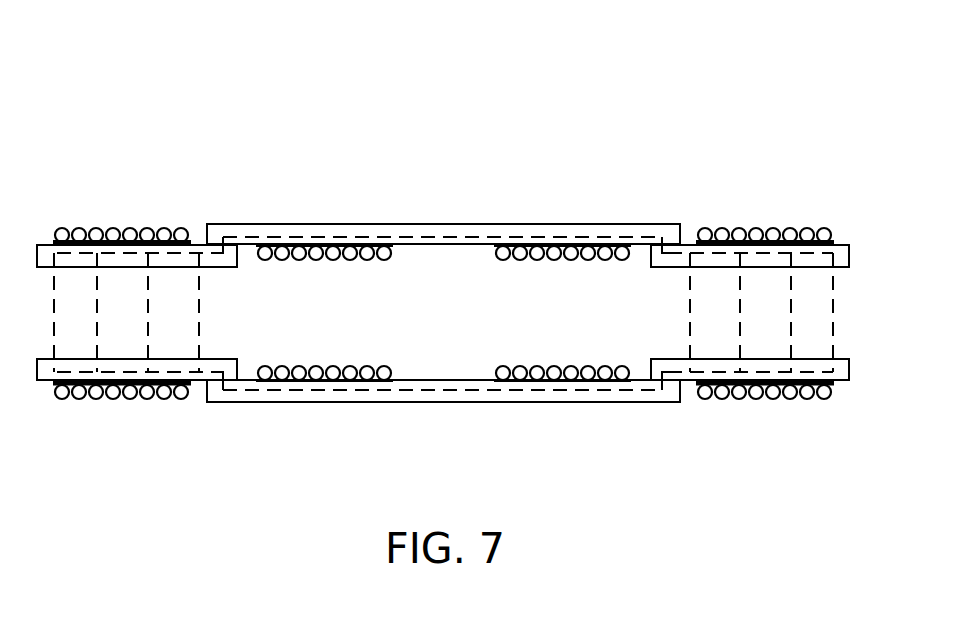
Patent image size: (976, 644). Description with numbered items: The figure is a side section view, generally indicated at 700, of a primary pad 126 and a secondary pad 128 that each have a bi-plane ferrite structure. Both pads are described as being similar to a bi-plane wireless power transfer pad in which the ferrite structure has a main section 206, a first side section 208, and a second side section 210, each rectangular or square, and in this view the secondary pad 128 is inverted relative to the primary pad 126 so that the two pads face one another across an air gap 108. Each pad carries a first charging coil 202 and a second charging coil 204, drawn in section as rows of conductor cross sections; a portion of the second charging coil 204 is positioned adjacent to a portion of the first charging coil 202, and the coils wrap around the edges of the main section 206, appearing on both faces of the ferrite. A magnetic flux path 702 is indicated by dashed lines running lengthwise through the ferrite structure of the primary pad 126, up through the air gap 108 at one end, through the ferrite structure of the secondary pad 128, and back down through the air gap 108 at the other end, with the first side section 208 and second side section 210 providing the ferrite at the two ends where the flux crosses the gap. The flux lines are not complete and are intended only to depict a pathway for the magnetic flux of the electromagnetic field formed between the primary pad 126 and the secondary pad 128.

The interconnect assembly 700 is at (100, 70).
The magnetic flux path 702 is at (423, 237).
The first charging coil 202 is at (295, 250).
The second charging coil 204 is at (595, 253).
The main section 206 is at (549, 225).
The first side section 208 is at (46, 245).
The second side section 210 is at (692, 258).
The secondary pad 128 is at (127, 192).
The primary pad 126 is at (130, 424).
The air gap 108 is at (462, 337).